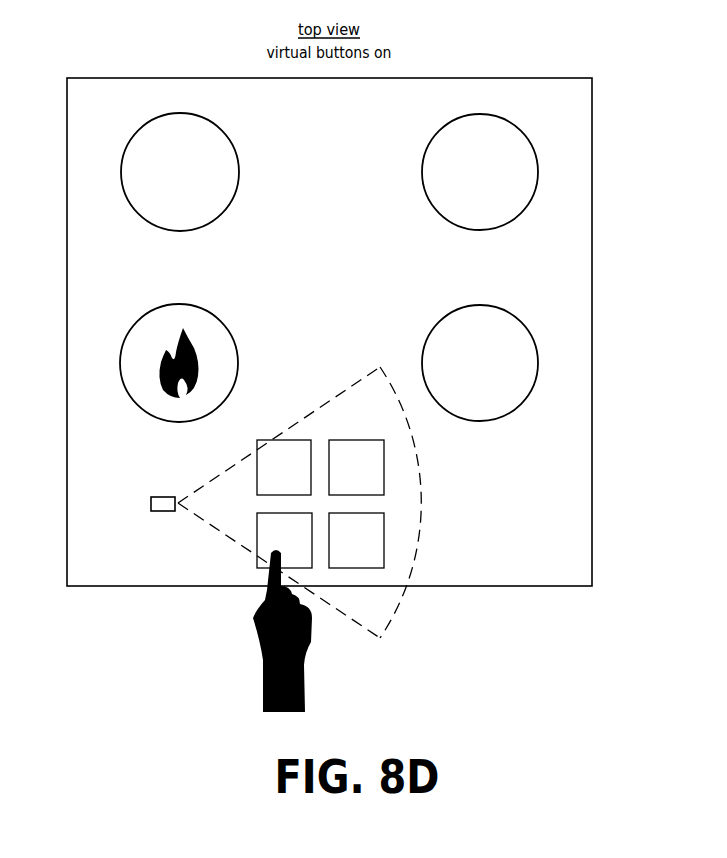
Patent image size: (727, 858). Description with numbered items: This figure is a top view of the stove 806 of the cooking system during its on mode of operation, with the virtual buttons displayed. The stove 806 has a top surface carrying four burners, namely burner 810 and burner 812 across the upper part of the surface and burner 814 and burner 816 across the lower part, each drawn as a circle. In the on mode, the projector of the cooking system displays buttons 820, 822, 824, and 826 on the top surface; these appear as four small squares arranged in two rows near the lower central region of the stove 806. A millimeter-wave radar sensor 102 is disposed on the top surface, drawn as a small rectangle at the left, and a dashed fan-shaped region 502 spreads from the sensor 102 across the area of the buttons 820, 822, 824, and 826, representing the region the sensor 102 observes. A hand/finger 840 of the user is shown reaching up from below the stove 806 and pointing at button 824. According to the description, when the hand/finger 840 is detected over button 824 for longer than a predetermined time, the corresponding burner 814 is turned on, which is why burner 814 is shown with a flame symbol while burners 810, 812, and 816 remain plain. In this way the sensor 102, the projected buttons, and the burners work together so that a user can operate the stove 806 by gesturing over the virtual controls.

The millimeter-wave radar sensor 102 is at (151, 498).
The field of view of the sensor 502 is at (418, 532).
The stove 806 is at (592, 316).
The burner 810 is at (166, 182).
The burner 812 is at (466, 182).
The burner 814 is at (222, 322).
The burner 816 is at (466, 373).
The button 820 is at (270, 477).
The button 822 is at (342, 477).
The button 824 is at (257, 515).
The button 826 is at (342, 550).
The hand/finger 840 is at (255, 618).